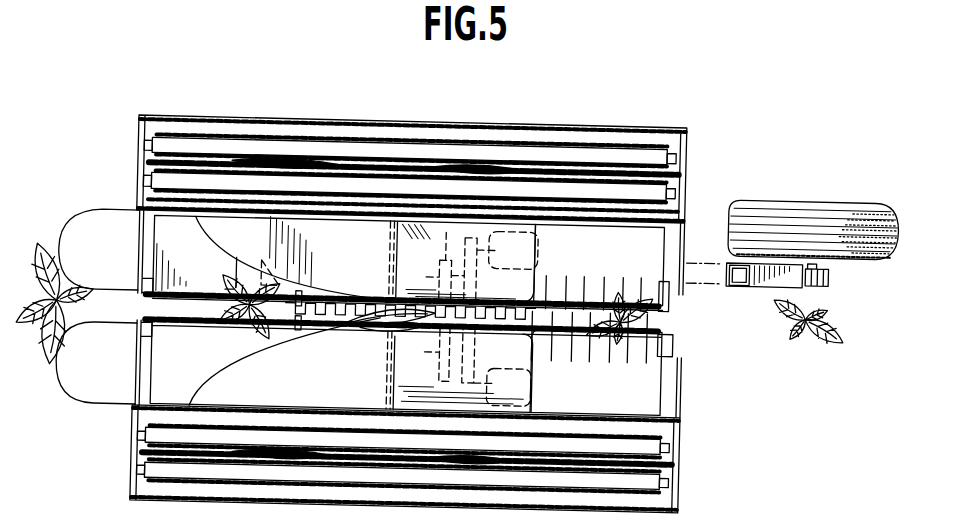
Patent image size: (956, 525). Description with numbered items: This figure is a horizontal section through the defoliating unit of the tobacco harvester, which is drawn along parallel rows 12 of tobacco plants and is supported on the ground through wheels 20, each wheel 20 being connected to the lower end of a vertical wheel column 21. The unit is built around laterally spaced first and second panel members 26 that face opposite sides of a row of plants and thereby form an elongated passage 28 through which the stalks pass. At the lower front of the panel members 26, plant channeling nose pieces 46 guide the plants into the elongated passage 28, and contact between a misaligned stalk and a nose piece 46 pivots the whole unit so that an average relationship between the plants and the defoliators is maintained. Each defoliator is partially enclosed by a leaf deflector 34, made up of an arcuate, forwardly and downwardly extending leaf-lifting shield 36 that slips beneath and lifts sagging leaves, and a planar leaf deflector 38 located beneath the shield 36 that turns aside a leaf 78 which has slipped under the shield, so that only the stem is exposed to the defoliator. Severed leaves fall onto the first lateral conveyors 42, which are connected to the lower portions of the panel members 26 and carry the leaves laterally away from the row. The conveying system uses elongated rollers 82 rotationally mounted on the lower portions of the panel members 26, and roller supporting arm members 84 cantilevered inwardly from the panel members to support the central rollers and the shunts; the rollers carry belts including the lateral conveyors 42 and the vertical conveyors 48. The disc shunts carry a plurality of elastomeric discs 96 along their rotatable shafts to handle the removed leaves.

The parallel rows of tobacco plants 12 is at (828, 308).
The wheel 20 is at (838, 190).
The wheel column 21 is at (765, 273).
The panel member 26 is at (139, 182).
The elongated passage 28 is at (140, 298).
The leaf deflector 34 is at (393, 248).
The leaf-lifting shield 36 is at (343, 247).
The planar leaf deflector 38 is at (393, 276).
The first lateral conveyor 42 is at (198, 256).
The plant channeling nose piece 46 is at (78, 221).
The vertical conveyor 48 is at (175, 161).
The leaf 78 is at (248, 270).
The elongated roller 82 is at (140, 257).
The roller supporting arm member 84 is at (141, 233).
The elastomeric disc 96 is at (586, 348).